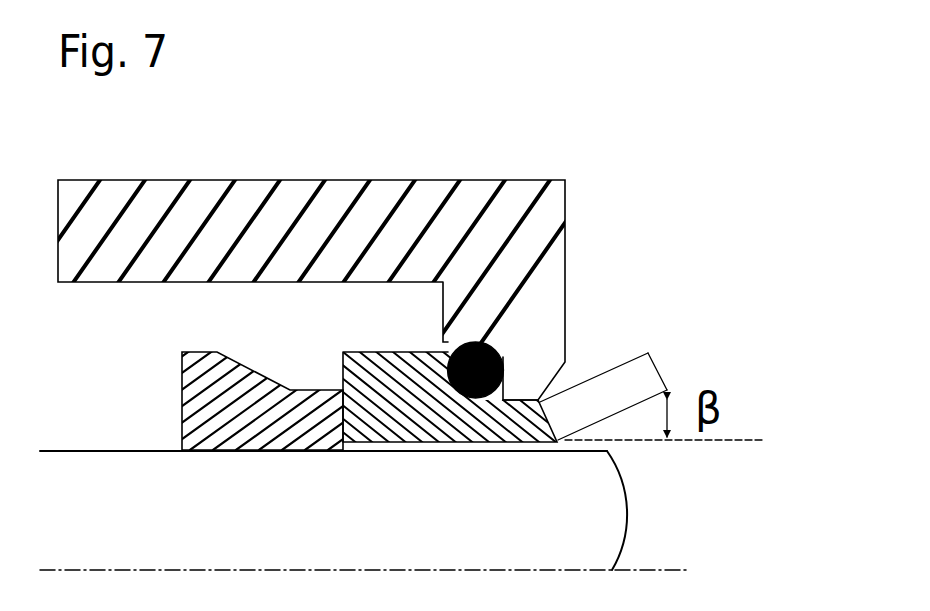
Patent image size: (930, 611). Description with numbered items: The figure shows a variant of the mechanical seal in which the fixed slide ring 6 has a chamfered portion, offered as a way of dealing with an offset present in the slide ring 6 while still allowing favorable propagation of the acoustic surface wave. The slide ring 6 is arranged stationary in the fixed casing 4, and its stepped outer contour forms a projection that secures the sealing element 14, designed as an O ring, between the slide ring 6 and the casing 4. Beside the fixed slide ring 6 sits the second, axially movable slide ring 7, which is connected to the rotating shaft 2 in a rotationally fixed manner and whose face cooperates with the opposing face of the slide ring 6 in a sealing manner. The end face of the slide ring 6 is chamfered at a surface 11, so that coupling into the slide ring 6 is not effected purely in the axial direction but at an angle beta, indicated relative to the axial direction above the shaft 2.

The rotating shaft 2 is at (568, 520).
The fixed casing 4 is at (545, 210).
The first axially fixed slide ring 6 is at (373, 382).
The second axially movable slide ring 7 is at (237, 405).
The chamfered surface 11 is at (638, 378).
The sealing element 14 is at (502, 357).